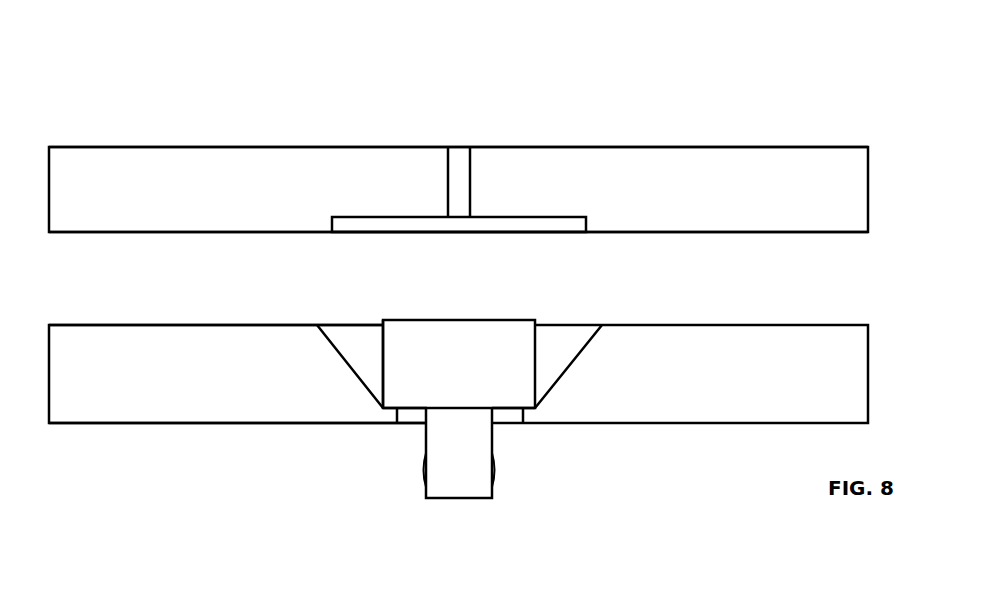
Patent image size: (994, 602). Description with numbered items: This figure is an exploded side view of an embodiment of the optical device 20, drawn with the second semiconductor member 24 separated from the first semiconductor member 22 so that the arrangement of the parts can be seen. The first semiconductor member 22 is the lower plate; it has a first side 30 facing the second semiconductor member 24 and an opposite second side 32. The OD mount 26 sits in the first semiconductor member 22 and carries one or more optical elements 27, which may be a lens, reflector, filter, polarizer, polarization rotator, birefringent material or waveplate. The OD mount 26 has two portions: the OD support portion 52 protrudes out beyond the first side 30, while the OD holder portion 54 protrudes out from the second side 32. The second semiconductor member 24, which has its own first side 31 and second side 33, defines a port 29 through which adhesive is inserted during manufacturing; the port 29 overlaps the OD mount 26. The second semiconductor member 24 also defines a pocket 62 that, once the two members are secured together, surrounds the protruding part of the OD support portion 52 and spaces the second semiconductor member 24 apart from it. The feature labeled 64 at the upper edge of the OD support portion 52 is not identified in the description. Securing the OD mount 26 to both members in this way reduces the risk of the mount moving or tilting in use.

The optical device 20 is at (158, 102).
The first semiconductor member 22 is at (317, 424).
The second semiconductor member 24 is at (510, 147).
The OD mount 26 is at (537, 437).
The optical element 27 is at (422, 468).
The port 29 is at (458, 152).
The first side 30 is at (57, 325).
The first side 31 is at (793, 147).
The second side 32 is at (63, 424).
The second side 33 is at (788, 232).
The OD support portion 52 is at (455, 333).
The OD holder portion 54 is at (465, 455).
The pocket 62 is at (408, 225).
The edge of OD support portion 64 is at (382, 320).